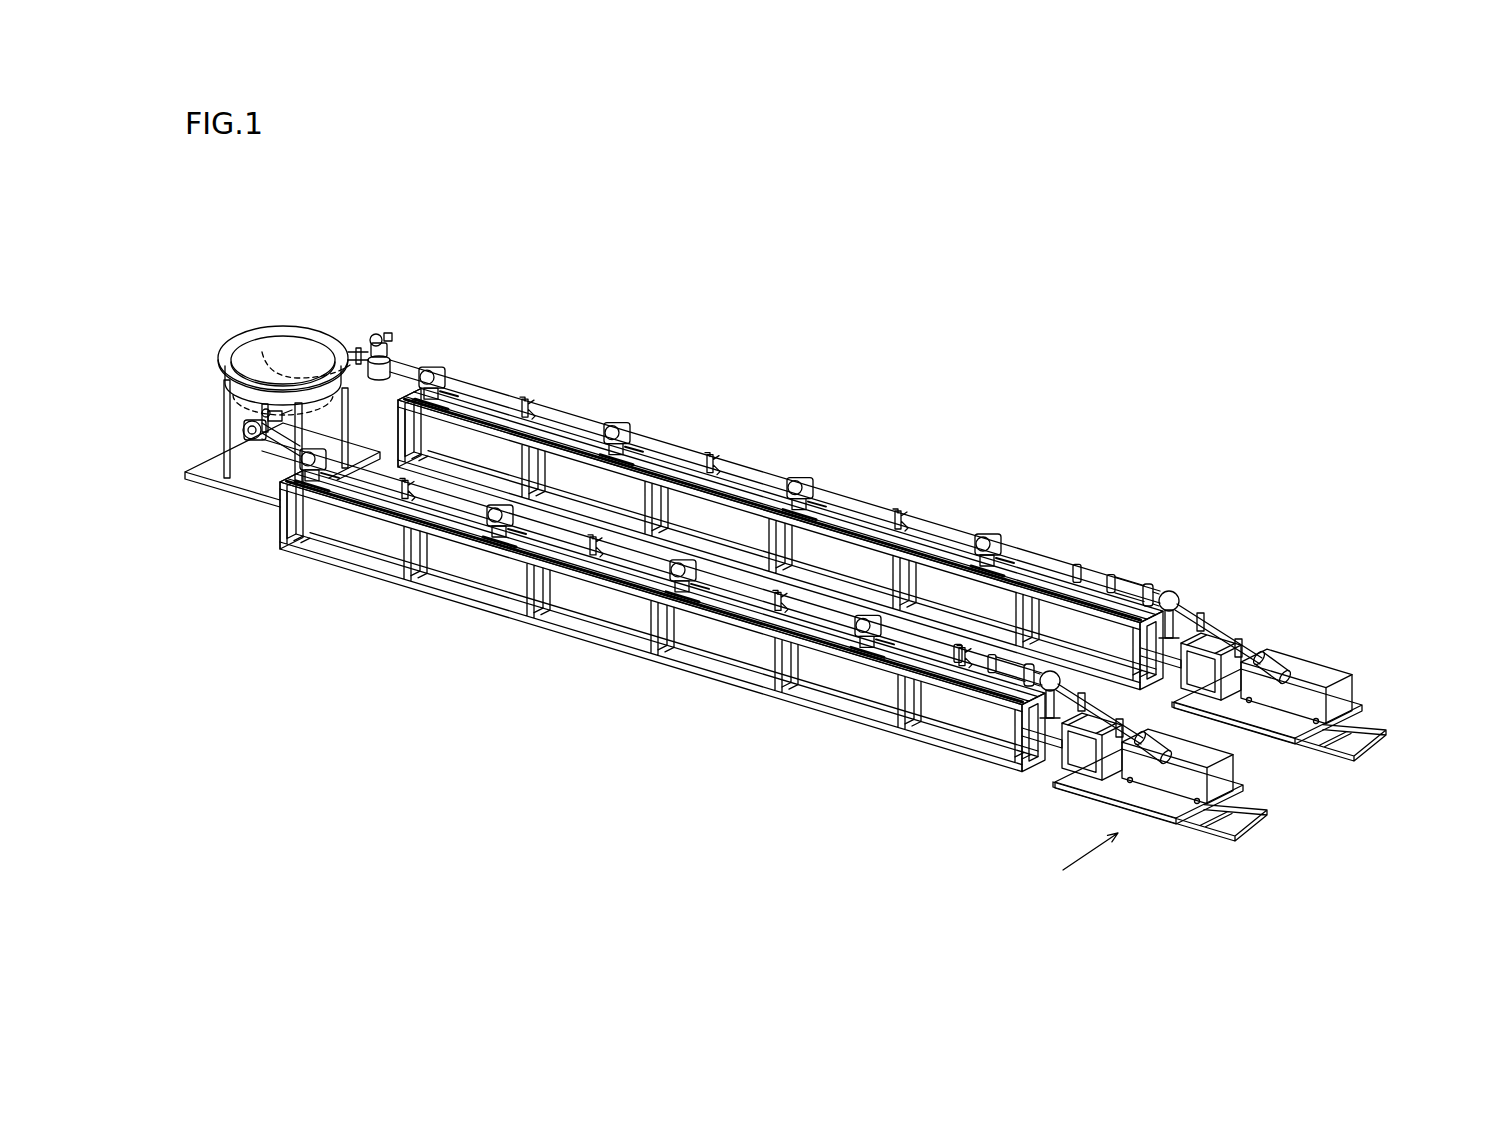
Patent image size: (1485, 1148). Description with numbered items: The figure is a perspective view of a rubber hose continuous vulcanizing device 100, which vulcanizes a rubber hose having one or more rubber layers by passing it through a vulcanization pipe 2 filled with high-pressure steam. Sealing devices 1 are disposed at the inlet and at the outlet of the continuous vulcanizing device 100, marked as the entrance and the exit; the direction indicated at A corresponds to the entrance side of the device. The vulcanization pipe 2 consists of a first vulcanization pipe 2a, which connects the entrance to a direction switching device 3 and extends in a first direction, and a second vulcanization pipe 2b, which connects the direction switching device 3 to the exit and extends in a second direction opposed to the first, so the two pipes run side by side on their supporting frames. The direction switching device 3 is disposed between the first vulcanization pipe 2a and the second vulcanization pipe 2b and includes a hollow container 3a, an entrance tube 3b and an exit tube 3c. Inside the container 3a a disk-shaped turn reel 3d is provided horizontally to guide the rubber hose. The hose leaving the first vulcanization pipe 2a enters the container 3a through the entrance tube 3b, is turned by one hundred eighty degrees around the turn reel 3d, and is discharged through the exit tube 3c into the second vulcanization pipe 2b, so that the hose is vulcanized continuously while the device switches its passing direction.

The continuous vulcanizing device 100 is at (1022, 388).
The sealing device 1 is at (1308, 656).
The vulcanization pipe 2 is at (712, 566).
The first vulcanization pipe 2a is at (750, 586).
The second vulcanization pipe 2b is at (850, 498).
The direction switching device 3 is at (244, 304).
The container 3a is at (283, 355).
The entrance tube 3b is at (250, 437).
The exit tube 3c is at (363, 352).
The turn reel 3d is at (262, 350).
The conveyance direction A is at (1077, 863).